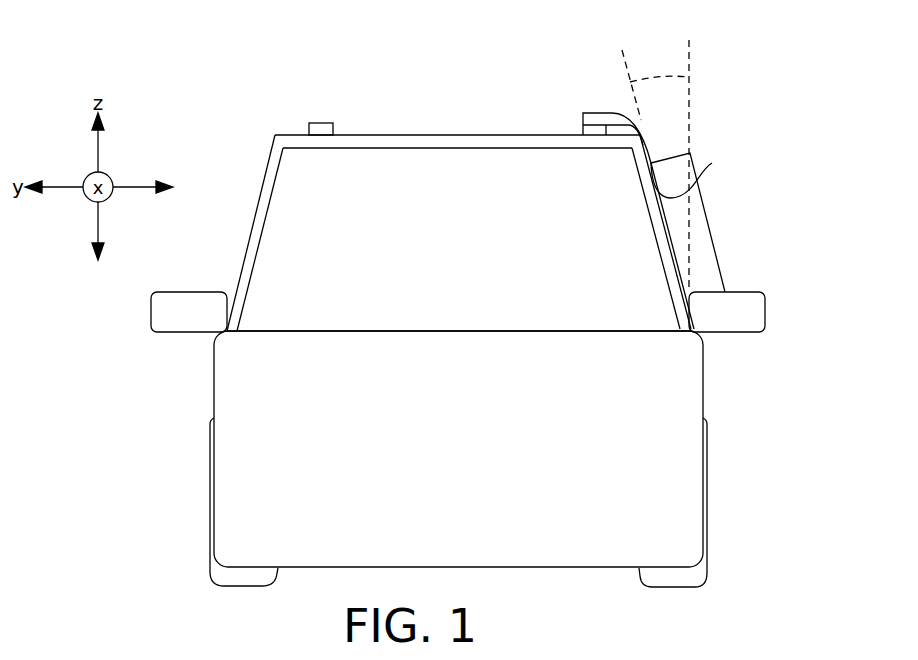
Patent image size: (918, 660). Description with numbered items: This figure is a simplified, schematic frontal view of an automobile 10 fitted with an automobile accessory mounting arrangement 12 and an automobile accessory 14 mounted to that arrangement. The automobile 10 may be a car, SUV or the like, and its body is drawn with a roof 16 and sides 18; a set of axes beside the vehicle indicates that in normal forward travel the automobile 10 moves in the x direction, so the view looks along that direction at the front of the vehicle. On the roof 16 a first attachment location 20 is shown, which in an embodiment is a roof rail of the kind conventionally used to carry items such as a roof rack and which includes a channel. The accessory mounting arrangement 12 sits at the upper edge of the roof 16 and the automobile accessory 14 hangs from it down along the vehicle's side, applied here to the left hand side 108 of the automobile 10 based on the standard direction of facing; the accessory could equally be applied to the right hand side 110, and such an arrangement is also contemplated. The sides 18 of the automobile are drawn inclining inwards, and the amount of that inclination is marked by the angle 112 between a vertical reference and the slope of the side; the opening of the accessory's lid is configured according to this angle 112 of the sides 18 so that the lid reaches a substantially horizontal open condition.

The automobile 10 is at (745, 520).
The automobile accessory mounting arrangement 12 is at (570, 120).
The automobile accessory 14 is at (702, 220).
The roof 16 is at (432, 138).
The sides 18 is at (259, 202).
The first attachment location 20 is at (321, 122).
The left hand side 108 is at (712, 163).
The right hand side 110 is at (241, 272).
The angle 112 is at (662, 76).